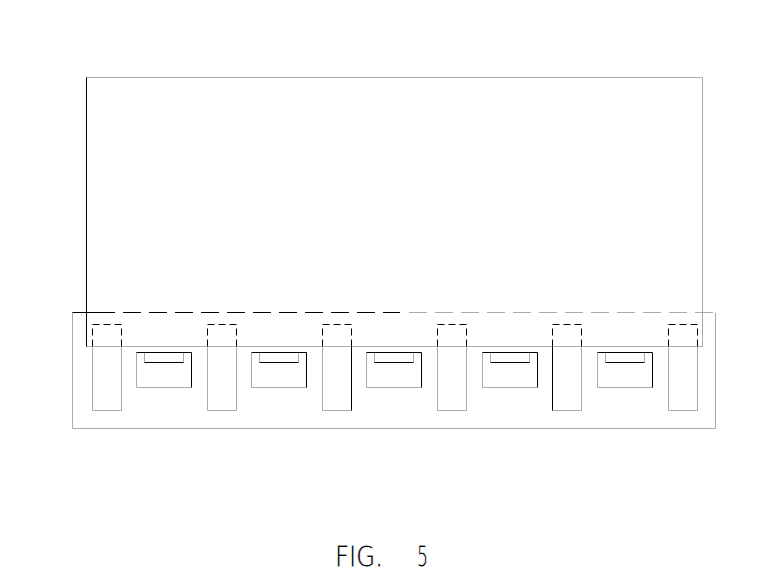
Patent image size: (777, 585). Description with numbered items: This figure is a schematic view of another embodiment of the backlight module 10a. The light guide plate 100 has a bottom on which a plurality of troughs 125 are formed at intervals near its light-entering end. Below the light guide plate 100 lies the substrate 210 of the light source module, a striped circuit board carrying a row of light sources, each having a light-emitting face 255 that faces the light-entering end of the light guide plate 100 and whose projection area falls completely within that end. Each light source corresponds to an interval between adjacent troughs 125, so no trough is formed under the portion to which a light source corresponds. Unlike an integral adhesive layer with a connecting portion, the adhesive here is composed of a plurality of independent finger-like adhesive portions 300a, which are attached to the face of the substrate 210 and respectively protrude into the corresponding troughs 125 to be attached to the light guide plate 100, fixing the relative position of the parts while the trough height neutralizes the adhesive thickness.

The backlight module 10a is at (66, 42).
The light guide plate 100 is at (690, 107).
The troughs 125 is at (102, 322).
The substrate 210 is at (93, 417).
The light-emitting face 255 is at (627, 353).
The finger-like adhesive portions 300a is at (685, 398).